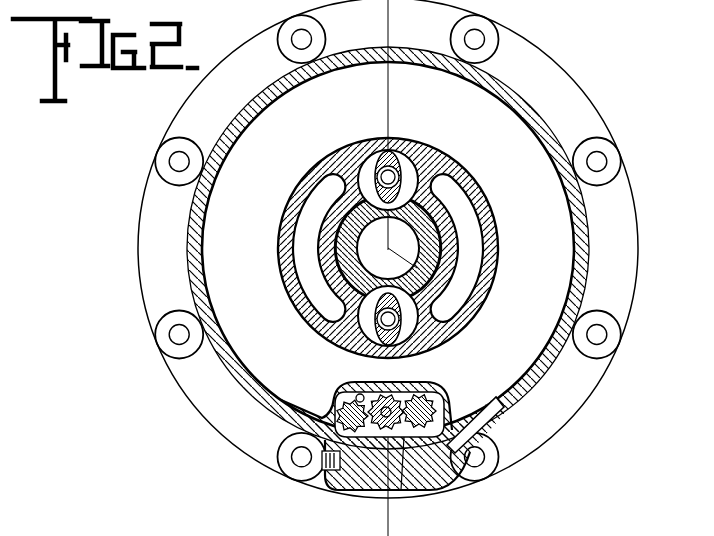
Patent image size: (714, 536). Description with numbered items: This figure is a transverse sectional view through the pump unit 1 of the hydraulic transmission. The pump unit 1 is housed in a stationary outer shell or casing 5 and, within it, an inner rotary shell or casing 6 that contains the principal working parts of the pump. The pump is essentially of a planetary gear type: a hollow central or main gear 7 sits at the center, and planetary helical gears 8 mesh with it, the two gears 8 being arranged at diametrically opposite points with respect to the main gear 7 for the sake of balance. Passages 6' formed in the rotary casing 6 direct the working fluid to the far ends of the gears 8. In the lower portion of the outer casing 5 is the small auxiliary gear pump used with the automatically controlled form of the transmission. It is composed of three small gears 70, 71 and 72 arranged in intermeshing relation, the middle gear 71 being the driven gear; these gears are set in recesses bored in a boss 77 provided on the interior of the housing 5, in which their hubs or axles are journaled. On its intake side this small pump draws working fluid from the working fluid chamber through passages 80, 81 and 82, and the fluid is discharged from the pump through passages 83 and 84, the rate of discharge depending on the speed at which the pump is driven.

The pump unit 1 is at (188, 245).
The stationary outer shell or casing 5 is at (523, 108).
The inner rotary shell or casing 6 is at (395, 248).
The passages 6' is at (394, 248).
The hollow central or main gear 7 is at (337, 258).
The planetary helical gears 8 is at (370, 187).
The small gear 70 is at (338, 398).
The middle gear 71 is at (390, 396).
The small gear 72 is at (423, 396).
The boss 77 is at (395, 388).
The passage 80 is at (382, 518).
The passage 81 is at (360, 394).
The passage 82 is at (402, 490).
The passage 83 is at (453, 403).
The passage 84 is at (352, 471).